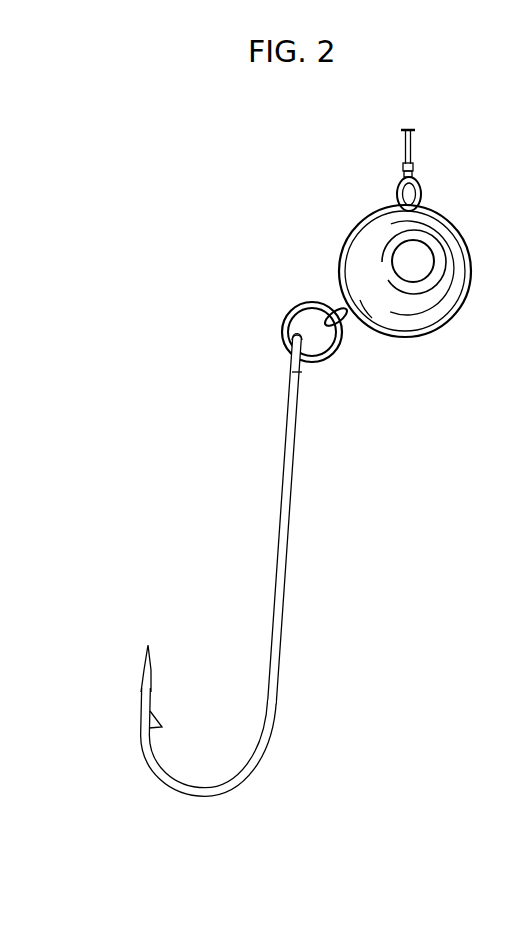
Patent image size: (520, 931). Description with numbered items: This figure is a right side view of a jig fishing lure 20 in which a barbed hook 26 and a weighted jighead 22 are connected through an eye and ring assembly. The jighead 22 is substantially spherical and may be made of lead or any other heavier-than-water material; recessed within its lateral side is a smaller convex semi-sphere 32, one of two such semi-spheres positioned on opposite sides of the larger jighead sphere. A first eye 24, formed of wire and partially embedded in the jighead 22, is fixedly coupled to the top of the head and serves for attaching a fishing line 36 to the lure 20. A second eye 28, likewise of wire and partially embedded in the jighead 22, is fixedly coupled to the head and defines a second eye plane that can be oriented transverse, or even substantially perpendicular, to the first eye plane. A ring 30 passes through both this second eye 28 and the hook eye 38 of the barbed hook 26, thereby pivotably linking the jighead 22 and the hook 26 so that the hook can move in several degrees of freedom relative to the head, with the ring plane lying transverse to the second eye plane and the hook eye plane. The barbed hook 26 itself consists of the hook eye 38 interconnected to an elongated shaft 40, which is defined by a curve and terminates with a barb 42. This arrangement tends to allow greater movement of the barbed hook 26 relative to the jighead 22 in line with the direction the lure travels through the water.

The jig fishing lure 20 is at (304, 110).
The weighted jighead 22 is at (347, 230).
The first eye 24 is at (396, 188).
The barbed hook 26 is at (239, 563).
The second eye 28 is at (340, 312).
The ring 30 is at (333, 357).
The convex semi-sphere 32 is at (410, 268).
The fishing line 36 is at (411, 144).
The hook eye 38 is at (255, 385).
The elongated shaft 40 is at (284, 592).
The barb 42 is at (149, 690).